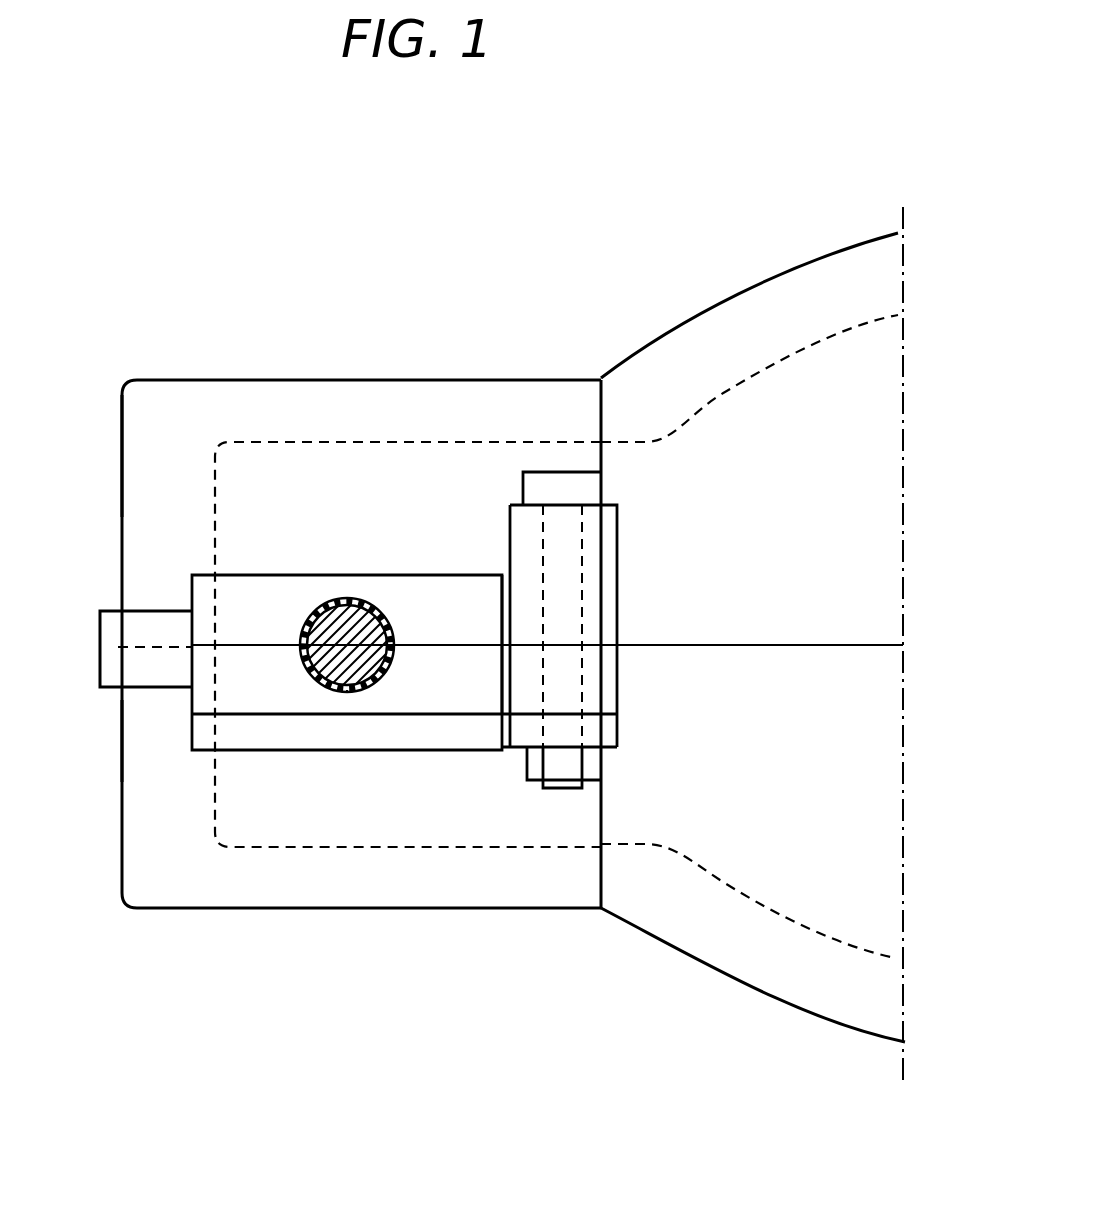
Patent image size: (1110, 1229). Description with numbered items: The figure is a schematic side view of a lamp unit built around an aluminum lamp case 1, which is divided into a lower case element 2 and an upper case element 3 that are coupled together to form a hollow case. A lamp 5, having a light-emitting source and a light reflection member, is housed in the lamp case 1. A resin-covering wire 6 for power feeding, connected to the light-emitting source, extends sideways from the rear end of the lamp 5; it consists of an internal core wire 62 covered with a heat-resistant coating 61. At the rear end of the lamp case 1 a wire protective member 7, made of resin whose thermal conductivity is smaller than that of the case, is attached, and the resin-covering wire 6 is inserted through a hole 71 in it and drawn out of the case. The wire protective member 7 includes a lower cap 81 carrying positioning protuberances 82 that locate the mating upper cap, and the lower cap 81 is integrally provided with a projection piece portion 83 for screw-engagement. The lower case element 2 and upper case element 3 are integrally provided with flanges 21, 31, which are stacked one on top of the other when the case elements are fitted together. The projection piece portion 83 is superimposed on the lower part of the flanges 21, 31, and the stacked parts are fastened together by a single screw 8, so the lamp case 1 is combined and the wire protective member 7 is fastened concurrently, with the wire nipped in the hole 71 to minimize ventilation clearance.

The lamp case 1 is at (421, 379).
The lower case element 2 is at (122, 782).
The upper case element 3 is at (122, 517).
The lamp 5 is at (715, 393).
The resin-covering wire 6 is at (347, 600).
The coating 61 is at (366, 601).
The internal core wire 62 is at (303, 632).
The wire protective member 7 is at (432, 566).
The hole 71 is at (345, 692).
The screw 8 is at (583, 550).
The lower cap 81 is at (423, 698).
The positioning protuberances 82 is at (482, 580).
The projection piece portion 83 is at (605, 732).
The flange 21 is at (600, 683).
The flange 31 is at (602, 597).